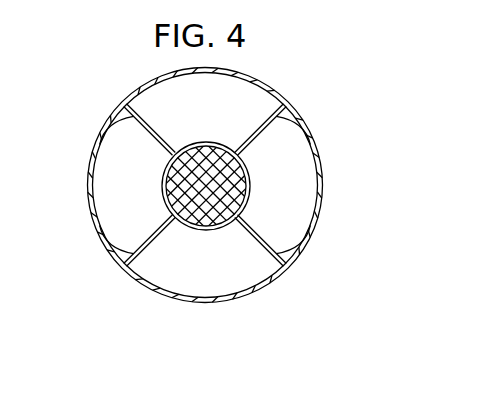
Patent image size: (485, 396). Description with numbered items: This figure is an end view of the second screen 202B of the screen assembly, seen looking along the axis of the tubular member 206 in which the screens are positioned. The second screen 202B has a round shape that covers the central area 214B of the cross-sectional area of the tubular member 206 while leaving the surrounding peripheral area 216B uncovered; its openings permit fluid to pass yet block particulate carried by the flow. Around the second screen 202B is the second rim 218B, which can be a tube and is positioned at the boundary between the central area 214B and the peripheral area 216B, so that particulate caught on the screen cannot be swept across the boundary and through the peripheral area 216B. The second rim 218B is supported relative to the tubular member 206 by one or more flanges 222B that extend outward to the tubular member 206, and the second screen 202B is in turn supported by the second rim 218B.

The tubular member 206 is at (323, 212).
The peripheral area 216B is at (222, 267).
The flanges 222B is at (98, 142).
The second rim 218B is at (252, 187).
The second screen 202B is at (213, 146).
The central area 214B is at (175, 189).